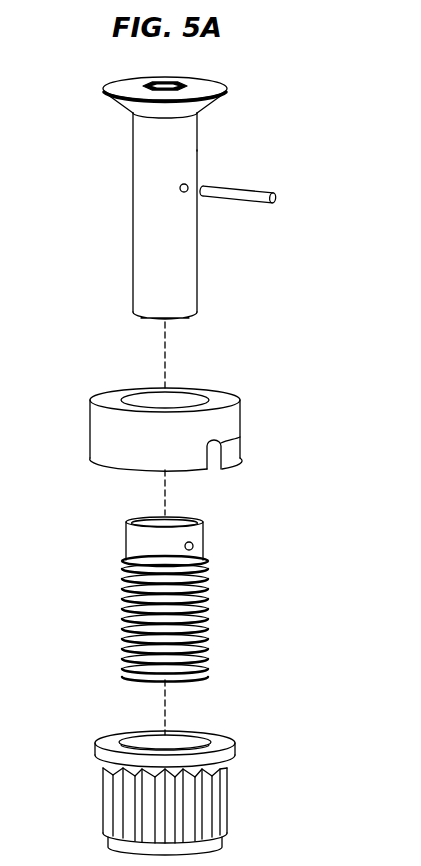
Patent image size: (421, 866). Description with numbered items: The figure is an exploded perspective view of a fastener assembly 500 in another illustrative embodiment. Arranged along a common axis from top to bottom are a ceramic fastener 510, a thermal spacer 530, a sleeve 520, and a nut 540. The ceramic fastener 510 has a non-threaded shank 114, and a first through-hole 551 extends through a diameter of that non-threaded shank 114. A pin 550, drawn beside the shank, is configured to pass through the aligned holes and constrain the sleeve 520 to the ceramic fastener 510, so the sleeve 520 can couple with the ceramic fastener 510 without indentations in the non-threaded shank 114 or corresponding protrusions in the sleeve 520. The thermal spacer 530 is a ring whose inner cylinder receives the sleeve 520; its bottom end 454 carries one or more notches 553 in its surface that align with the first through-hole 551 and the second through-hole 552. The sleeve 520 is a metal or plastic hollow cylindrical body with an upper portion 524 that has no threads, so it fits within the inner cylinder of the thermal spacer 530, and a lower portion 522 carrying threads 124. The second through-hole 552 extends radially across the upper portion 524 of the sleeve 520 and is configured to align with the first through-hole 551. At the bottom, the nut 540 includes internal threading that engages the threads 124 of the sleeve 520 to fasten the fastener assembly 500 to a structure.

The fastener assembly 500 is at (345, 98).
The ceramic fastener 510 is at (116, 162).
The non-threaded shank 114 is at (199, 150).
The pin 550 is at (261, 186).
The first through-hole 551 is at (188, 190).
The thermal spacer 530 is at (57, 405).
The notch 553 is at (240, 440).
The bottom end 454 is at (234, 452).
The sleeve 520 is at (82, 578).
The second through-hole 552 is at (195, 545).
The upper portion 524 is at (210, 553).
The lower portion 522 is at (224, 620).
The threads 124 is at (106, 640).
The nut 540 is at (270, 800).